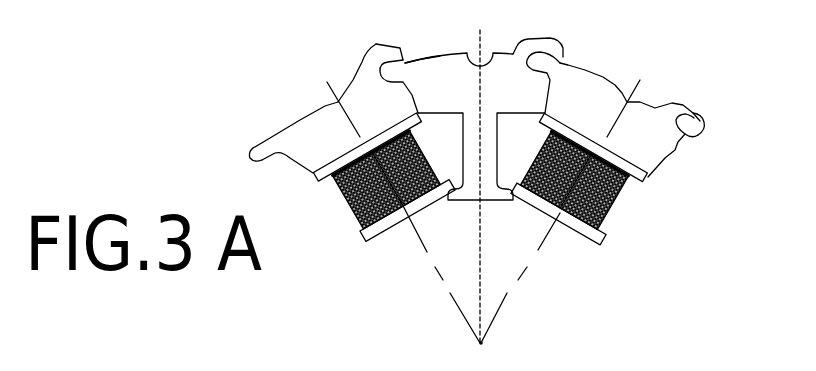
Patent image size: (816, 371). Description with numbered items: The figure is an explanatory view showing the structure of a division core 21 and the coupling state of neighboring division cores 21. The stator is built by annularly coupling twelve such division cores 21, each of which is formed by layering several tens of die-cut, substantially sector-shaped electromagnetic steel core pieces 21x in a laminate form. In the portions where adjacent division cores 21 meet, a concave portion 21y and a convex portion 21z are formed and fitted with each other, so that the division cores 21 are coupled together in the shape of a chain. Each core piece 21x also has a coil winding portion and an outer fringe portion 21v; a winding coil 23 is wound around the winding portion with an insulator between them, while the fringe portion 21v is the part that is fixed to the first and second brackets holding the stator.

The division core 21 is at (310, 123).
The fringe portion 21v is at (375, 50).
The core piece 21x is at (439, 72).
The concave portion 21y is at (685, 120).
The convex portion 21z is at (252, 148).
The winding coil 23 is at (342, 194).